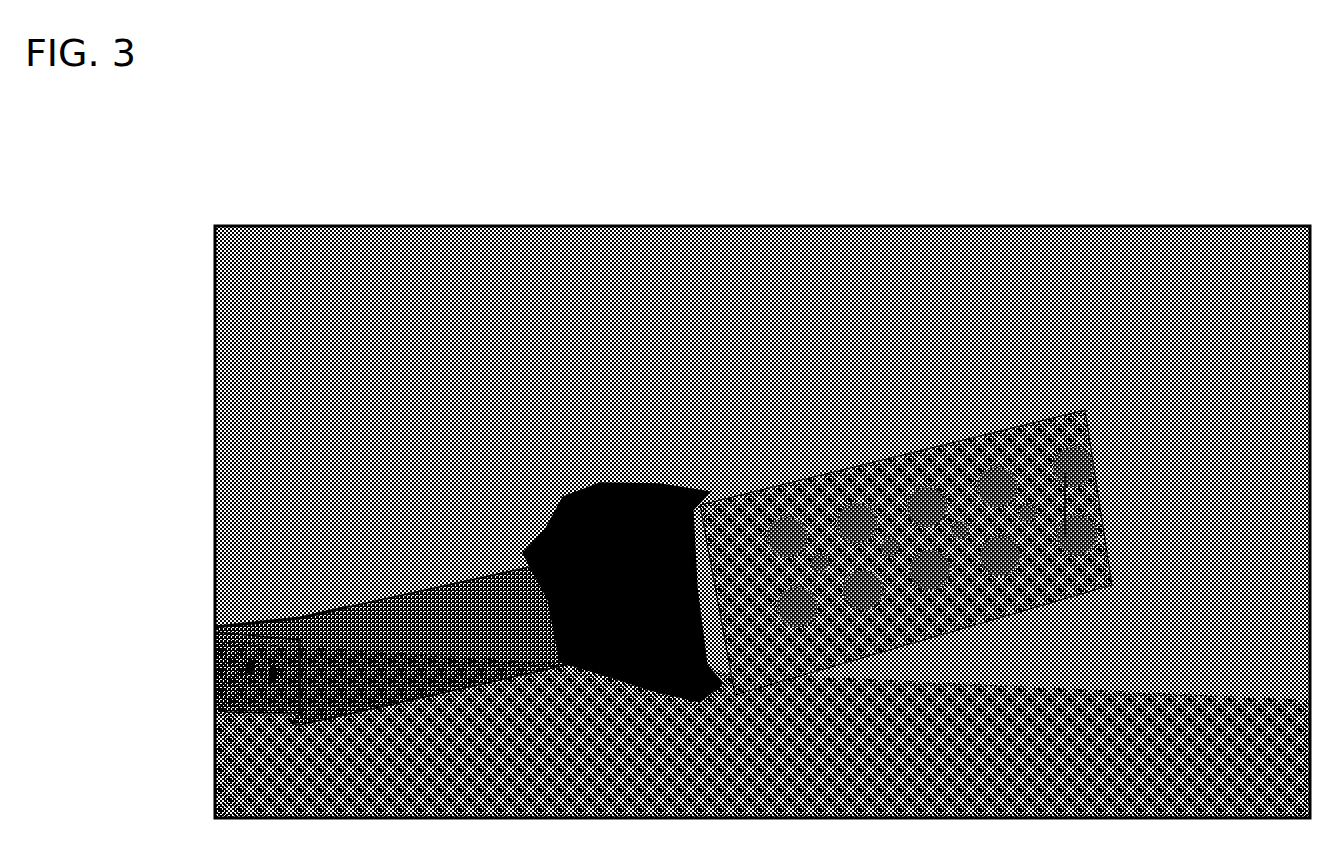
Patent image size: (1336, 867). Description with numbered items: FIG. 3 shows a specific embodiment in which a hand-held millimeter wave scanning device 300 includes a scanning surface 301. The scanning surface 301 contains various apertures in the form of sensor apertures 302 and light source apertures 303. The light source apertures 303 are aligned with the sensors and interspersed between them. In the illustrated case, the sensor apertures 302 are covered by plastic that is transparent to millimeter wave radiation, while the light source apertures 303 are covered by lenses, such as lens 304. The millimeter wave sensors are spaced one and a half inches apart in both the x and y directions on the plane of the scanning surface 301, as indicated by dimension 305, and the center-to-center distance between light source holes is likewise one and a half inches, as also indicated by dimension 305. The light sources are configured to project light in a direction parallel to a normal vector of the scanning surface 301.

The hand-held millimeter wave scanning device 300 is at (287, 262).
The scanning surface 301 is at (1035, 577).
The sensor apertures 302 is at (831, 590).
The light source apertures 303 is at (773, 545).
The lens 304 is at (892, 538).
The dimension 305 is at (990, 490).